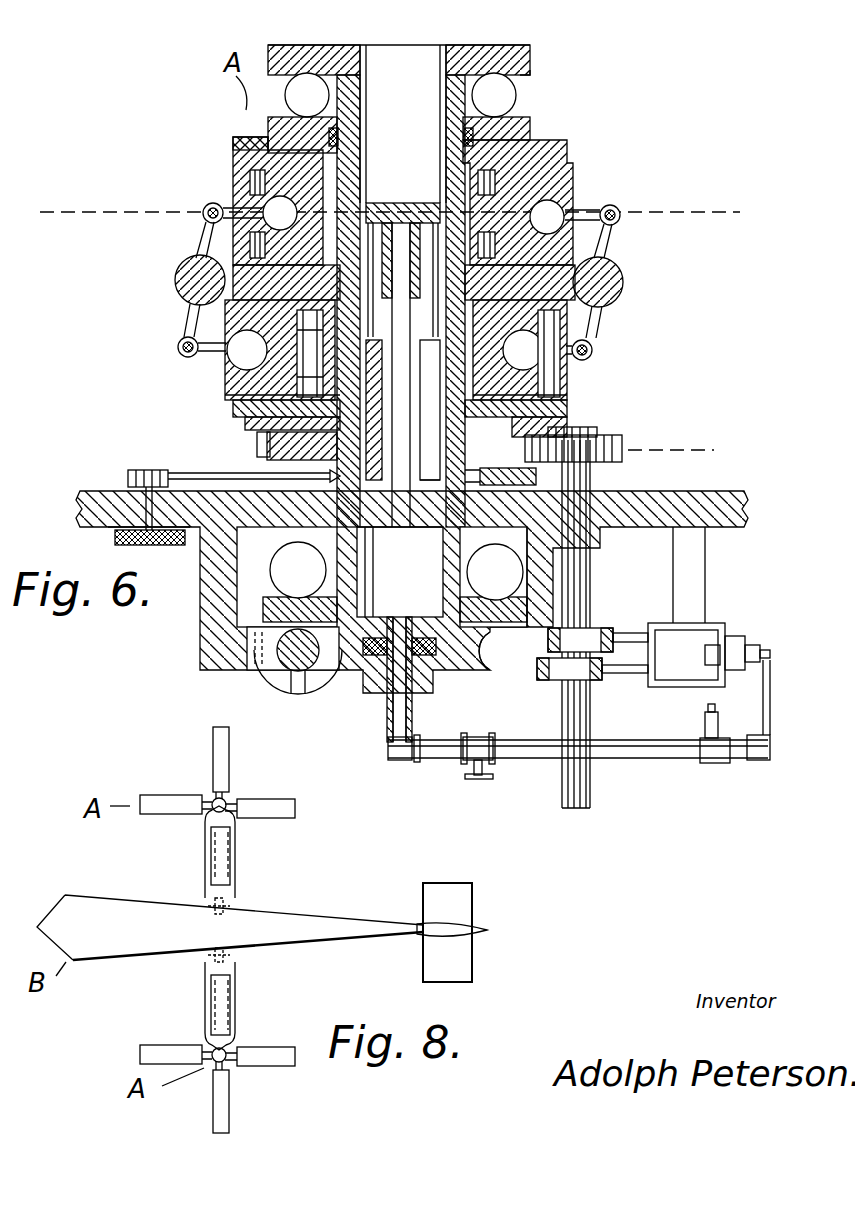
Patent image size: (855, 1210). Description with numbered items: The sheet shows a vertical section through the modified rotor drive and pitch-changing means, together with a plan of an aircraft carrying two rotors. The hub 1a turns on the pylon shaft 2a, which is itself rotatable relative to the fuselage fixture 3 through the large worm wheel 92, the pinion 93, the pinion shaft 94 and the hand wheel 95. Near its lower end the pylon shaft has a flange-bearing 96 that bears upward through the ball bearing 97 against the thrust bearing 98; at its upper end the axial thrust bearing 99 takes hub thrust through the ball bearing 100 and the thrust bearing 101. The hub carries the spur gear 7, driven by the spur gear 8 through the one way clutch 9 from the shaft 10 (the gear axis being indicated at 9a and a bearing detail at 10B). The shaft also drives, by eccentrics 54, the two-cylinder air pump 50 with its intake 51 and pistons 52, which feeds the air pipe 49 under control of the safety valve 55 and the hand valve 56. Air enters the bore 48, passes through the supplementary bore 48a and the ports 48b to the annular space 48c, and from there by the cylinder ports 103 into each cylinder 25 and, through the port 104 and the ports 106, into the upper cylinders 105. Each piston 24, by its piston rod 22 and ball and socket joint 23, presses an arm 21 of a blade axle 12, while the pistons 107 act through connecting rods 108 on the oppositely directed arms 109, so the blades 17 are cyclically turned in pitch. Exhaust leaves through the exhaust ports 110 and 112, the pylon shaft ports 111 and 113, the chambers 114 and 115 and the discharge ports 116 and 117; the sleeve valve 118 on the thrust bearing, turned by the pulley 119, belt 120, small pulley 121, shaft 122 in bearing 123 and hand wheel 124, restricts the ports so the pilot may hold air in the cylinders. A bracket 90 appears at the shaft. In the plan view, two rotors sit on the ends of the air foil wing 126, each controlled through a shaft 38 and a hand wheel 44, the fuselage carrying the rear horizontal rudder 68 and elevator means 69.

In FIG. 6, the hub 1a is at (300, 140).
In FIG. 6, the pylon shaft 2a is at (390, 45).
In FIG. 6, the fuselage fixture 3 is at (78, 508).
In FIG. 6, the spur gear 7 is at (76, 204).
In FIG. 6, the spur gear 8 is at (622, 440).
In FIG. 6, the one way clutch 9 is at (598, 428).
In FIG. 6, the gear axis 9a is at (685, 451).
In FIG. 6, the shaft 10 is at (592, 720).
In FIG. 6, the roller bearing 10B is at (312, 353).
In FIG. 6, the blade axle 12 is at (176, 282).
In FIG. 8, the blade 17 is at (277, 815).
In FIG. 6, the arm 21 is at (184, 320).
In FIG. 6, the piston rod 22 is at (176, 350).
In FIG. 6, the ball and socket joint 23 is at (385, 350).
In FIG. 6, the piston 24 is at (226, 366).
In FIG. 6, the cylinder 25 is at (240, 390).
In FIG. 8, the shaft 38 is at (158, 931).
In FIG. 8, the hand wheel 44 is at (202, 930).
In FIG. 6, the bore 48 is at (400, 420).
In FIG. 6, the supplementary bore 48a is at (400, 541).
In FIG. 6, the ports 48b is at (399, 239).
In FIG. 6, the annular space 48c is at (372, 205).
In FIG. 6, the air pipe 49 is at (408, 758).
In FIG. 6, the two-cylinder air pump 50 is at (696, 688).
In FIG. 6, the intake 51 is at (705, 656).
In FIG. 6, the pistons 52 is at (636, 632).
In FIG. 6, the eccentrics 54 is at (592, 628).
In FIG. 6, the safety valve 55 is at (738, 722).
In FIG. 6, the hand valve 56 is at (482, 780).
In FIG. 8, the rear horizontal rudder 68 is at (487, 932).
In FIG. 8, the elevator means 69 is at (474, 904).
In FIG. 6, the bracket 90 is at (518, 478).
In FIG. 6, the worm wheel 92 is at (478, 675).
In FIG. 6, the pinion 93 is at (272, 696).
In FIG. 6, the pinion shaft 94 is at (276, 670).
In FIG. 8, the pinion shaft 94 is at (217, 892).
In FIG. 6, the hand wheel 95 is at (312, 696).
In FIG. 8, the hand wheel 95 is at (236, 950).
In FIG. 6, the flange-bearing 96 is at (494, 652).
In FIG. 6, the ball bearing 97 is at (524, 576).
In FIG. 6, the thrust bearing 98 is at (495, 572).
In FIG. 6, the axial thrust bearing 99 is at (530, 70).
In FIG. 6, the ball bearing 100 is at (516, 95).
In FIG. 6, the thrust bearing 101 is at (530, 126).
In FIG. 6, the cylinder ports 103 is at (428, 353).
In FIG. 6, the port 104 is at (438, 210).
In FIG. 6, the cylinders 105 is at (250, 158).
In FIG. 6, the ports 106 is at (411, 215).
In FIG. 6, the pistons 107 is at (250, 182).
In FIG. 6, the connecting rods 108 is at (212, 204).
In FIG. 6, the arms 109 is at (200, 240).
In FIG. 6, the exhaust ports 110 is at (236, 410).
In FIG. 6, the exhaust port 111 is at (430, 380).
In FIG. 6, the exhaust ports 112 is at (240, 142).
In FIG. 6, the port 113 is at (340, 134).
In FIG. 6, the chamber 114 is at (436, 455).
In FIG. 6, the chamber 115 is at (403, 124).
In FIG. 6, the discharge ports 116 is at (268, 458).
In FIG. 6, the discharge port 117 is at (455, 46).
In FIG. 6, the sleeve valve 118 is at (381, 577).
In FIG. 6, the pulley 119 is at (560, 488).
In FIG. 6, the belt 120 is at (150, 470).
In FIG. 6, the small pulley 121 is at (128, 472).
In FIG. 6, the shaft 122 is at (108, 528).
In FIG. 6, the bearing 123 is at (78, 490).
In FIG. 6, the hand wheel 124 is at (115, 540).
In FIG. 8, the air foil wing 126 is at (237, 889).